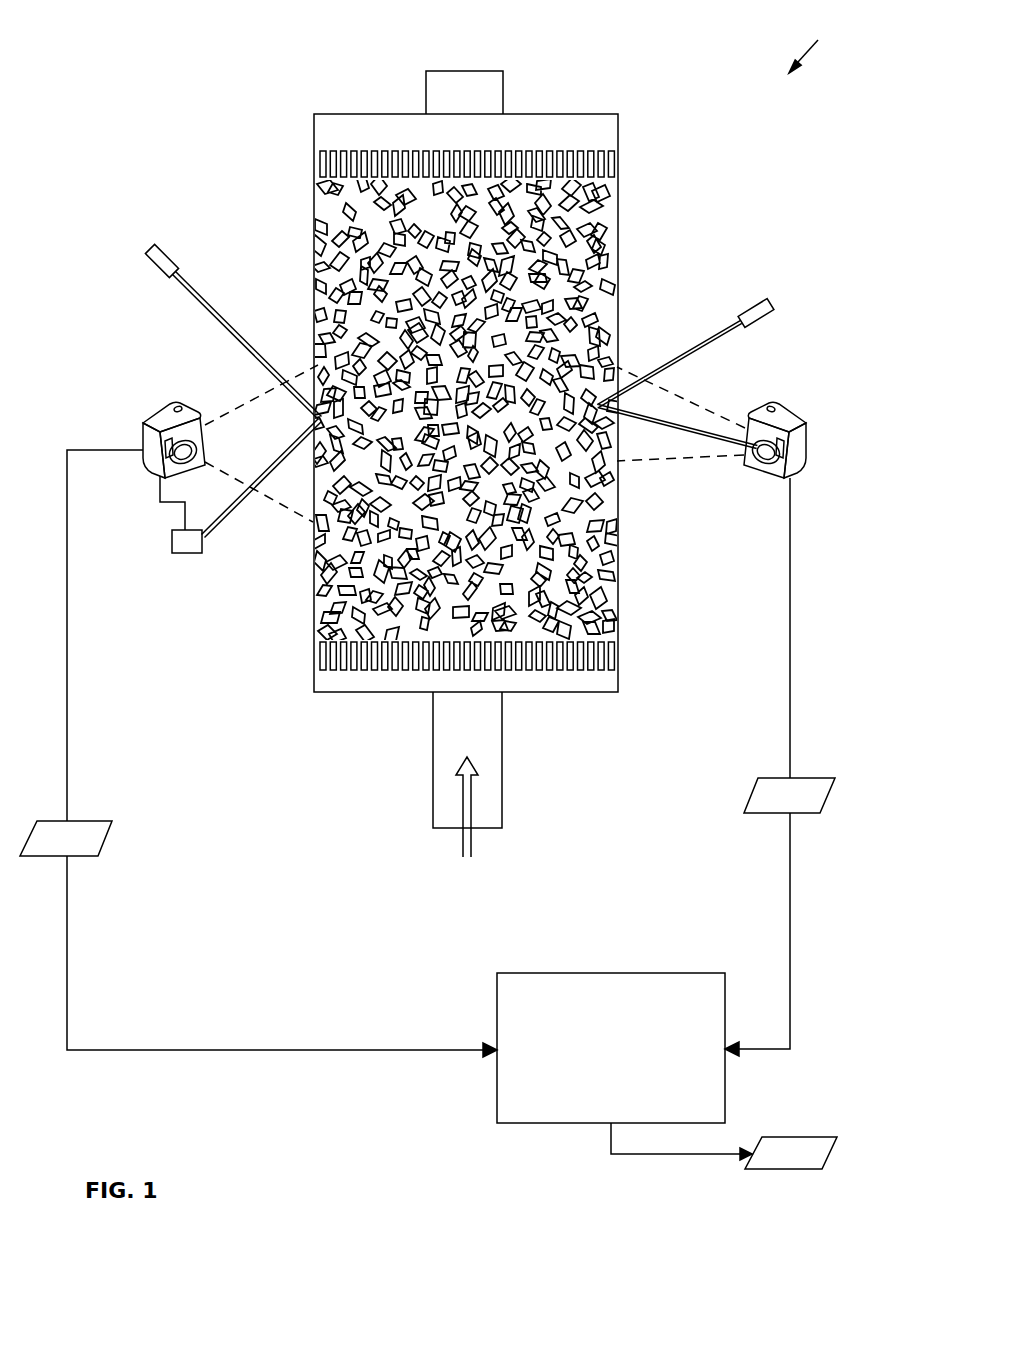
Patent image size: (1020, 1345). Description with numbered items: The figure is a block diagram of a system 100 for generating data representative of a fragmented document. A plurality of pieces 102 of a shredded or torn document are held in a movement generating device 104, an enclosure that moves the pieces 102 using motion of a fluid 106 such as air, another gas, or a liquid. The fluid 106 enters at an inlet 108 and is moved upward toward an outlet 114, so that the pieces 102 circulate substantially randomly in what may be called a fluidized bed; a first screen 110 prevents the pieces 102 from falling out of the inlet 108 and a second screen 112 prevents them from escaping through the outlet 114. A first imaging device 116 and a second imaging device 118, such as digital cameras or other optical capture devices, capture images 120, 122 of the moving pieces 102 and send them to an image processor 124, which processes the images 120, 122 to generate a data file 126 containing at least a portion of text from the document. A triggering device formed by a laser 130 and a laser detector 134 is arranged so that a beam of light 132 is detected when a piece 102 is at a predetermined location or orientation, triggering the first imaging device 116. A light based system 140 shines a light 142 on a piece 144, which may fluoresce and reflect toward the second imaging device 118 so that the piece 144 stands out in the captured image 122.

The system 100 is at (821, 43).
The pieces 102 is at (322, 216).
The movement generating device 104 is at (314, 645).
The fluid 106 is at (463, 824).
The inlet 108 is at (433, 758).
The first screen 110 is at (376, 668).
The second screen 112 is at (323, 168).
The outlet 114 is at (462, 71).
The first imaging device 116 is at (145, 418).
The second imaging device 118 is at (796, 415).
The images 120 is at (97, 821).
The images 122 is at (753, 795).
The image processor 124 is at (505, 973).
The data file 126 is at (792, 1173).
The laser 130 is at (151, 251).
The beam of light 132 is at (187, 289).
The laser detector 134 is at (173, 555).
The light based system 140 is at (772, 305).
The light 142 is at (715, 333).
The piece 144 is at (596, 402).